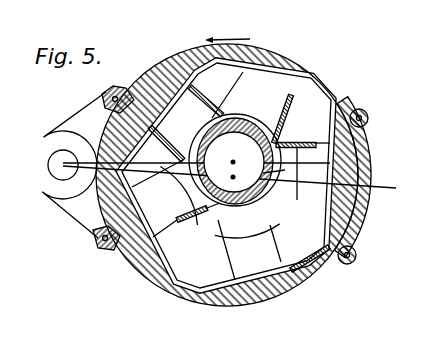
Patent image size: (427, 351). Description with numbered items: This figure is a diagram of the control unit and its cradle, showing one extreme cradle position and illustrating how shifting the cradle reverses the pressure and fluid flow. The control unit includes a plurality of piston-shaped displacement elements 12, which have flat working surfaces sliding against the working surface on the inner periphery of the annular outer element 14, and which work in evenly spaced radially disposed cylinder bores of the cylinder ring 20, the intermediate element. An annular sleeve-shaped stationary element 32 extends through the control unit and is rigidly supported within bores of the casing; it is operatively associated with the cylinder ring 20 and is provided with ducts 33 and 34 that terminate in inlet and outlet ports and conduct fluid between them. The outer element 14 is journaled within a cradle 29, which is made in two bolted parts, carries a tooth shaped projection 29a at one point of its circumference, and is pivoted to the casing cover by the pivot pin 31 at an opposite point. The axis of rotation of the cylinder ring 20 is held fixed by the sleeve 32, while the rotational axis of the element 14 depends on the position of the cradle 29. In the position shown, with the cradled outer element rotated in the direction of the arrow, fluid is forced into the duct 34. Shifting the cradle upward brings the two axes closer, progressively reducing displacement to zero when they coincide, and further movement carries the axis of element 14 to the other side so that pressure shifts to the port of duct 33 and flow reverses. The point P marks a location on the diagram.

The displacement element 12 is at (245, 255).
The annular outer element 14 is at (312, 283).
The cylinder ring 20 is at (282, 214).
The cradle 29 is at (357, 106).
The tooth shaped projection 29a is at (386, 196).
The pivot pin 31 is at (62, 190).
The stationary sleeve 32 is at (242, 206).
The duct 33 is at (191, 150).
The duct 34 is at (279, 141).
The reference point P is at (276, 171).